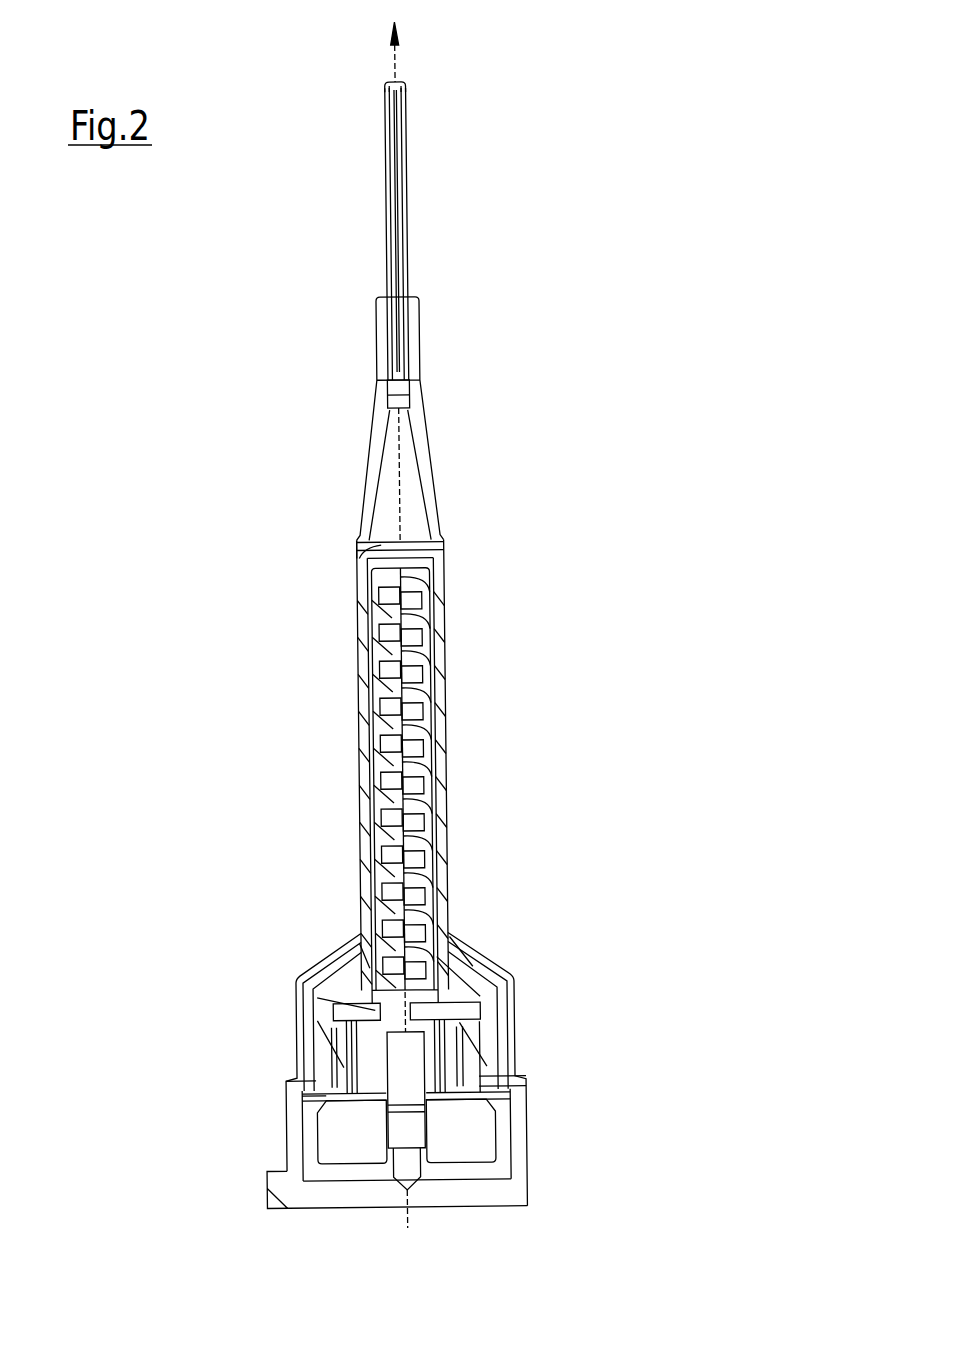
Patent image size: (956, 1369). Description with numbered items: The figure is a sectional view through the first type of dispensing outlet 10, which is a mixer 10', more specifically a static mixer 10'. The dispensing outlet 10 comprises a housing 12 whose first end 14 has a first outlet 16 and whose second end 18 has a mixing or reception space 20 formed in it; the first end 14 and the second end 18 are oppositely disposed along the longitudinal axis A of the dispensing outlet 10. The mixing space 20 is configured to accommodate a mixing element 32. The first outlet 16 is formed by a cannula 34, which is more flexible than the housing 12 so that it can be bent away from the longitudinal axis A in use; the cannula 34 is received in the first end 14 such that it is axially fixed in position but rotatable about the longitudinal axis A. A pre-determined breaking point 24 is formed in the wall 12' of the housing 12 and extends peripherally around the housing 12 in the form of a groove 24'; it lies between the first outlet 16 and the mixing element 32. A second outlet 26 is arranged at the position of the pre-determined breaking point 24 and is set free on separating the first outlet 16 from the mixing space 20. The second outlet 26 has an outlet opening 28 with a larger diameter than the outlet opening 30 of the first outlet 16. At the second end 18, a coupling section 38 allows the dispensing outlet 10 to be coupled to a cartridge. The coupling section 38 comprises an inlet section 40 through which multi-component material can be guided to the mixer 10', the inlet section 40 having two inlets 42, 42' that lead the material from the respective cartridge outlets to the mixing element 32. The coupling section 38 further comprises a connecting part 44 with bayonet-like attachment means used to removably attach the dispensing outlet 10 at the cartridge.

The dispensing outlet 10 is at (494, 636).
The mixer 10' is at (494, 636).
The housing 12 is at (425, 768).
The wall 12' is at (458, 475).
The first end 14 is at (365, 493).
The first outlet 16 is at (317, 70).
The second end 18 is at (411, 1100).
The mixing or reception space 20 is at (373, 907).
The pre-determined breaking point 24 is at (470, 550).
The groove 24' is at (470, 550).
The second outlet 26 is at (440, 543).
The outlet opening 28 is at (357, 553).
The outlet opening 30 is at (394, 82).
The mixing element 32 is at (360, 723).
The cannula 34 is at (407, 238).
The coupling section 38 is at (497, 1077).
The inlet section 40 is at (463, 1148).
The inlet 42 is at (352, 1132).
The inlet 42' is at (461, 1131).
The connecting part 44 is at (277, 1170).
The longitudinal axis A is at (405, 616).